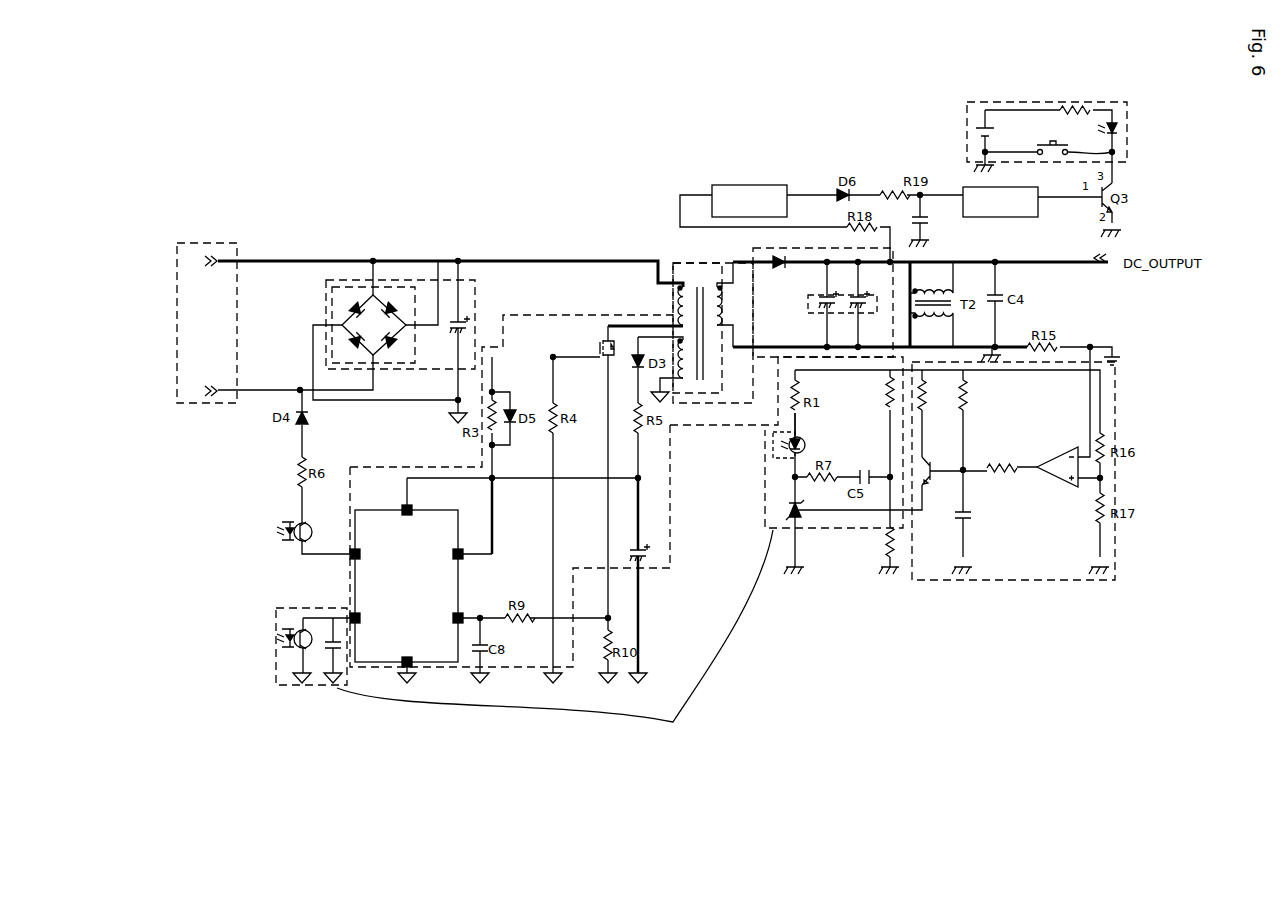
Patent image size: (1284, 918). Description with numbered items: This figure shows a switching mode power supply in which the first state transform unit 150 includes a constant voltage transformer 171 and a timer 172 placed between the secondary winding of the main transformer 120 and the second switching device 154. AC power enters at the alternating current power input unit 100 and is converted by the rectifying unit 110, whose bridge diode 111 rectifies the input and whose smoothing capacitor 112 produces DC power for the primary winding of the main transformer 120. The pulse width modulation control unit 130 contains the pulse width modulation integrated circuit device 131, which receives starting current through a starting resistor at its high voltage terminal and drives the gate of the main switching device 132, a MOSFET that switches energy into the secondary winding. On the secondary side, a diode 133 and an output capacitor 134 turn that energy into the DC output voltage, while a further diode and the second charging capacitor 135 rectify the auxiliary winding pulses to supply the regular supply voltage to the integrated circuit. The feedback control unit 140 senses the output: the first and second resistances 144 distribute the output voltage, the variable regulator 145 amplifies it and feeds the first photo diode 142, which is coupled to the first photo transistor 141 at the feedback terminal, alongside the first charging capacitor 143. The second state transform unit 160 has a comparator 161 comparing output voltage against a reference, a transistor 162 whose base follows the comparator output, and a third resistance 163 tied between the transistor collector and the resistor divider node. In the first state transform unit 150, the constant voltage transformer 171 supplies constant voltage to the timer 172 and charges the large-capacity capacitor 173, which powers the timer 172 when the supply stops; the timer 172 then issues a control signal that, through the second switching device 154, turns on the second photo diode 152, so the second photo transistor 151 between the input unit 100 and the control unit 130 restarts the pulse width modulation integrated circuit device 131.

The alternating current power input unit 100 is at (210, 244).
The rectifying unit 110 is at (394, 299).
The bridge diode 111 is at (353, 286).
The smoothing capacitor 112 is at (455, 318).
The main transformer 120 is at (658, 263).
The pulse width modulation control unit 130 is at (420, 467).
The pulse width modulation integrated circuit device 131 is at (380, 510).
The main switching device 132 is at (595, 320).
The diode 133 is at (780, 253).
The output capacitor 134 is at (843, 293).
The second charging capacitor 135 is at (642, 563).
The feedback control unit 140 is at (555, 642).
The first photo transistor 141 is at (276, 627).
The first photo diode 142 is at (775, 447).
The first charging capacitor 143 is at (328, 644).
The first and second resistances 144 is at (892, 392).
The variable regulator 145 is at (799, 513).
The first state transform unit 150 is at (1031, 135).
The second photo transistor 151 is at (274, 539).
The second photo diode 152 is at (1120, 130).
The second switching device 154 is at (1113, 152).
The second state transform unit 160 is at (987, 582).
The comparator 161 is at (1061, 486).
The transistor 162 is at (967, 488).
The third resistance 163 is at (928, 372).
The constant voltage transformer 171 is at (740, 184).
The timer 172 is at (965, 185).
The large-capacity capacitor 173 is at (911, 210).